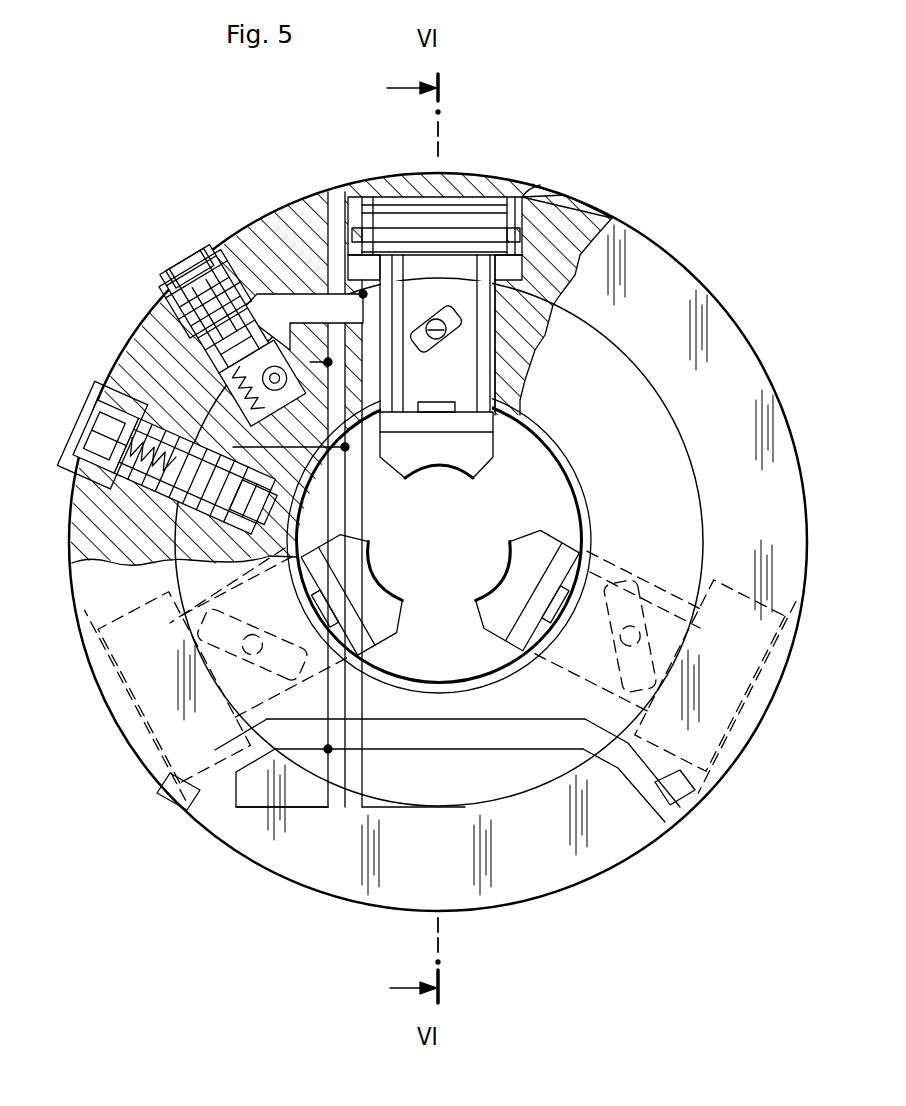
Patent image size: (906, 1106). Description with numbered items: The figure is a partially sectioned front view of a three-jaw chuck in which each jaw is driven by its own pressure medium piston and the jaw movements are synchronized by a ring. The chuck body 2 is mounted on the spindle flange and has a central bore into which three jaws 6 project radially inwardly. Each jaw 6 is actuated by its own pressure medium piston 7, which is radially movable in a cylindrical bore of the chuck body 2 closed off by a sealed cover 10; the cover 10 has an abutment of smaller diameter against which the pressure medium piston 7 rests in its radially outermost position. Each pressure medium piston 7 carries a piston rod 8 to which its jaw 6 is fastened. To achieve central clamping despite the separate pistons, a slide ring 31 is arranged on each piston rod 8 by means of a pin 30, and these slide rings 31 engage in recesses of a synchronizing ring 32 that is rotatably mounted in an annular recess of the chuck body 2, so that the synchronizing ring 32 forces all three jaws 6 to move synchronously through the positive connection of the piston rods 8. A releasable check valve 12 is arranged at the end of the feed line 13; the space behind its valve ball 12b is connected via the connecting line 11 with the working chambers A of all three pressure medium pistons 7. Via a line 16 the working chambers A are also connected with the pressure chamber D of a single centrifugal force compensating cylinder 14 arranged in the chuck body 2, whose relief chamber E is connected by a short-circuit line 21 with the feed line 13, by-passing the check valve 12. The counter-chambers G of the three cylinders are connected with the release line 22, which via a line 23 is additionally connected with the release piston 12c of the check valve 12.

The chuck body 2 is at (537, 878).
The jaw 6 is at (483, 450).
The pressure medium piston 7 is at (396, 212).
The piston rod 8 is at (478, 388).
The cover 10 is at (514, 186).
The connecting line 11 is at (306, 200).
The releasable check valve 12 is at (197, 352).
The valve ball 12b is at (270, 378).
The release piston 12c is at (200, 292).
The feed line 13 is at (325, 808).
The centrifugal force compensating cylinder 14 is at (108, 528).
The line 16 is at (247, 417).
The short-circuit line 21 is at (332, 470).
The release line 22 is at (395, 810).
The line 23 is at (283, 294).
The pin 30 is at (436, 320).
The slide ring 31 is at (430, 345).
The synchronizing ring 32 is at (635, 385).
The working chamber A is at (366, 197).
The pressure chamber D is at (125, 498).
The relief chamber E is at (250, 554).
The counter-chamber G is at (512, 268).